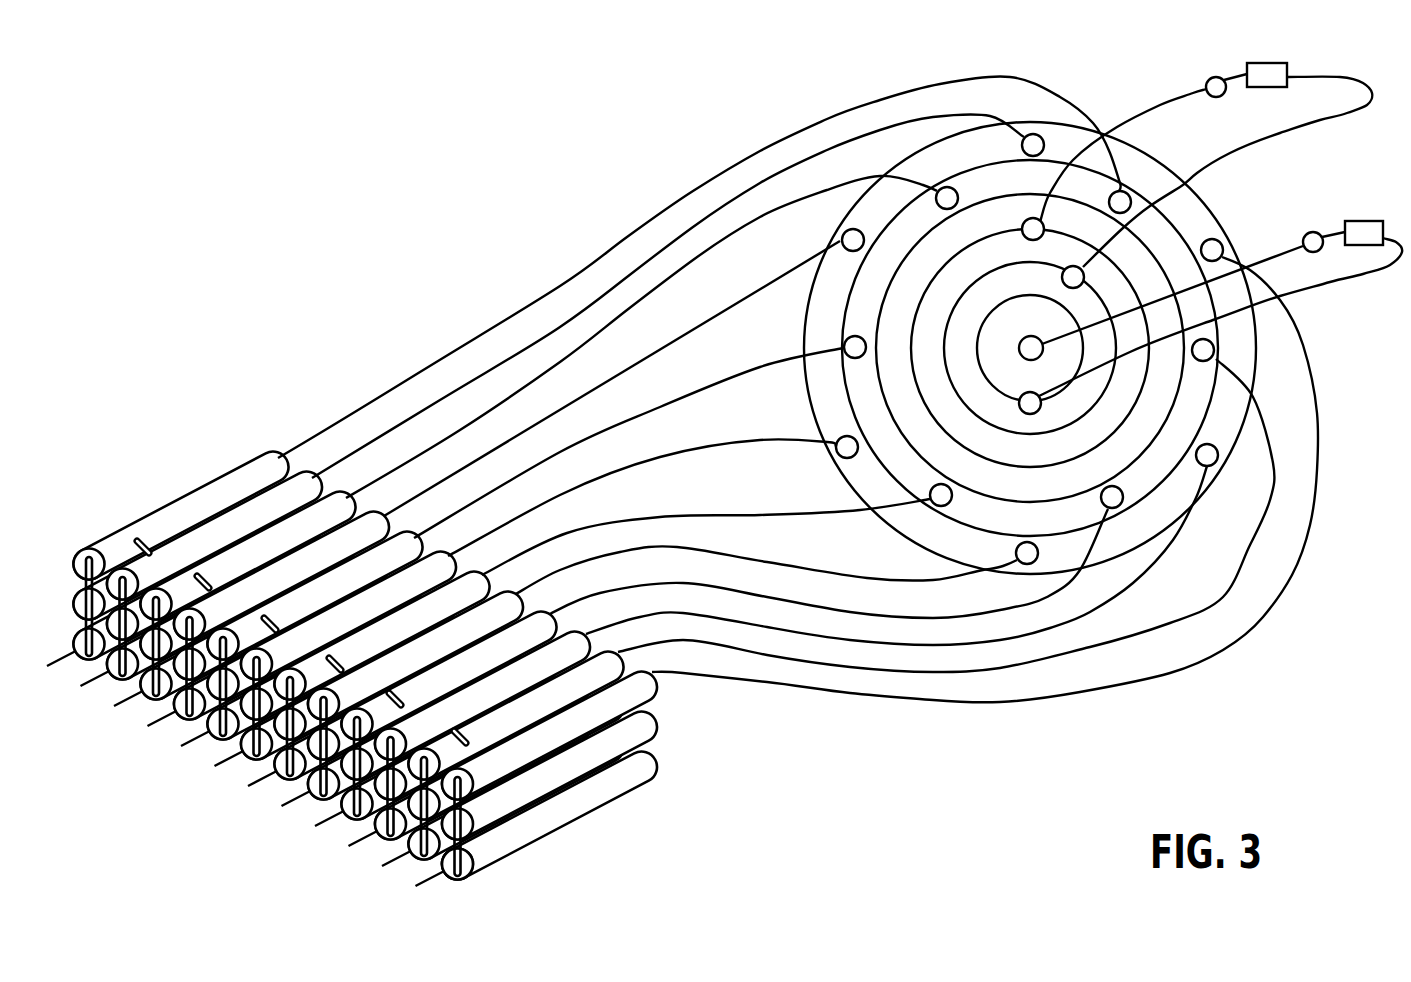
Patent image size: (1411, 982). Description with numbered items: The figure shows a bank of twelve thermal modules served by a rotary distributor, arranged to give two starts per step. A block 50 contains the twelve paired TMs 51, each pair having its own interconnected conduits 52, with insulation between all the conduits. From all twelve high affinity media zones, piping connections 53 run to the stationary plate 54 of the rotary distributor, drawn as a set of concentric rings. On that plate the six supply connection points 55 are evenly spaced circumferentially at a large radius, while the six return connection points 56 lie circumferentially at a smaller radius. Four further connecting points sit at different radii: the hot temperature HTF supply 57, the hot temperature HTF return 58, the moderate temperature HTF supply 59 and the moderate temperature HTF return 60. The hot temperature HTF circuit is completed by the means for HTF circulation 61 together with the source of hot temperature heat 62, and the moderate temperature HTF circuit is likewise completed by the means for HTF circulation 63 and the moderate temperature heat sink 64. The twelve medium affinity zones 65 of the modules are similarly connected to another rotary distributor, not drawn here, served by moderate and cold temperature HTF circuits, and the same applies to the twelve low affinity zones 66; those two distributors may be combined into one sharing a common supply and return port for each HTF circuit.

The block of paired TMs 50 is at (214, 483).
The paired TMs 51 is at (438, 856).
The interconnected conduits 52 is at (637, 690).
The piping connections 53 is at (968, 699).
The stationary plate 54 is at (1198, 195).
The supply connection points 55 is at (1040, 134).
The return connection points 56 is at (856, 358).
The hot temperature HTF supply connecting point 57 is at (1023, 226).
The hot temperature HTF return connecting point 58 is at (1072, 266).
The moderate temperature HTF supply connecting point 59 is at (1030, 373).
The moderate temperature HTF return connecting point 60 is at (1033, 336).
The means for HTF circulation 61 is at (1213, 77).
The source of hot temperature heat 62 is at (1282, 88).
The means for HTF circulation 63 is at (1308, 231).
The moderate temperature heat sink 64 is at (1366, 221).
The medium affinity zones 65 is at (498, 818).
The low affinity zones 66 is at (357, 824).